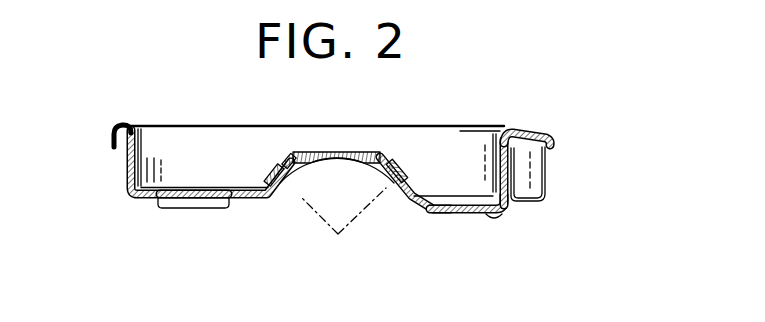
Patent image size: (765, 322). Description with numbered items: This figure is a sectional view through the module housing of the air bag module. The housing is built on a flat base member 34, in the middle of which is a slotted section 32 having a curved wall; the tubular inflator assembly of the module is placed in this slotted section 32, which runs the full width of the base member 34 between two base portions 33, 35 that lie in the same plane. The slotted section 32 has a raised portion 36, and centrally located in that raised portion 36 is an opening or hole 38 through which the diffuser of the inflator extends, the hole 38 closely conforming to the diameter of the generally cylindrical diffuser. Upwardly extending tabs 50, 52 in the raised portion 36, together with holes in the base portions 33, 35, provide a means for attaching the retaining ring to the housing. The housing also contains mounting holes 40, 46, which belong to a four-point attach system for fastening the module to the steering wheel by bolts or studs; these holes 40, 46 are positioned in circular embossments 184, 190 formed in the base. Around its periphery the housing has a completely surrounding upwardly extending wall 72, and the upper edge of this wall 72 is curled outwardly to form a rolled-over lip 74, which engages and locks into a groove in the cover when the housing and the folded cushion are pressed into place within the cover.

The slotted section 32 is at (397, 190).
The base portion 33 is at (142, 205).
The flat base member 34 is at (177, 187).
The base portion 35 is at (520, 211).
The raised portion 36 is at (289, 158).
The opening or hole 38 is at (340, 151).
The hole 40 is at (217, 208).
The hole 46 is at (453, 222).
The upwardly extending tab 50 is at (403, 172).
The upwardly extending tab 52 is at (268, 173).
The upwardly extending wall 72 is at (545, 162).
The rolled-over lip 74 is at (552, 133).
The circular embossment 184 is at (173, 210).
The circular embossment 190 is at (492, 217).